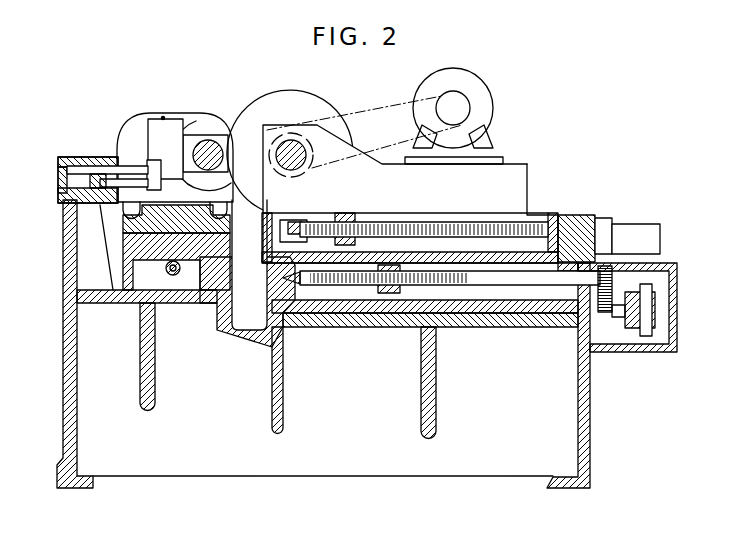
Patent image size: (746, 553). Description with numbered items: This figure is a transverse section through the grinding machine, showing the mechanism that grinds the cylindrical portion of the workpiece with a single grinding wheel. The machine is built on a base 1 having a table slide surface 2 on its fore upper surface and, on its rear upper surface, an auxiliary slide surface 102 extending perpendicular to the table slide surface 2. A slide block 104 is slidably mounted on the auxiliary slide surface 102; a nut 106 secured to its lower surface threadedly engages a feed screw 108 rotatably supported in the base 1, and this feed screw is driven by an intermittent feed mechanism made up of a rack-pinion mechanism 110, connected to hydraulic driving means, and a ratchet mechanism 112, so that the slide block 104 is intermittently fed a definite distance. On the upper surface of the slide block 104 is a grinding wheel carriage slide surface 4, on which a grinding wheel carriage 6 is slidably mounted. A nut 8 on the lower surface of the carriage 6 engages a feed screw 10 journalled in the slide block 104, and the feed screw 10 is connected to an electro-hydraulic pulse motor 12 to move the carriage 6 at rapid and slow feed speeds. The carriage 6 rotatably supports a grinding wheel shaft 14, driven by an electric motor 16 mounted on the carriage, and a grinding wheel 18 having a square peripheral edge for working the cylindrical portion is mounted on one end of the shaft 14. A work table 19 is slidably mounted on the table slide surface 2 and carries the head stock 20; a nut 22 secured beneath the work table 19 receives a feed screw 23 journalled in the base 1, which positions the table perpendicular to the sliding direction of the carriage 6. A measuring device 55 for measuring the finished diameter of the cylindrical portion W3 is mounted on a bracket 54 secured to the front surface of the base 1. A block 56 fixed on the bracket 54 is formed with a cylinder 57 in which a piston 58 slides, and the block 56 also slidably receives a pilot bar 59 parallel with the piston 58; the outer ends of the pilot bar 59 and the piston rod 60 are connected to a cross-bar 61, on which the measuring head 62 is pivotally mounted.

The base 1 is at (63, 388).
The table slide surface 2 is at (234, 278).
The grinding wheel carriage slide surface 4 is at (537, 196).
The grinding wheel carriage 6 is at (368, 166).
The nut 8 is at (344, 215).
The feed screw 10 is at (428, 222).
The electro-hydraulic pulse motor 12 is at (620, 230).
The grinding wheel shaft 14 is at (308, 152).
The electric motor 16 is at (484, 103).
The grinding wheel 18 is at (260, 92).
The work table 19 is at (125, 252).
The head stock 20 is at (228, 200).
The nut 22 is at (140, 312).
The feed screw 23 is at (176, 278).
The bracket 54 is at (70, 225).
The measuring device 55 is at (163, 117).
The block 56 is at (62, 166).
The cylinder 57 is at (62, 191).
The piston 58 is at (86, 157).
The pilot bar 59 is at (97, 175).
The piston rod 60 is at (135, 184).
The cross-bar 61 is at (149, 160).
The measuring head 62 is at (173, 125).
The cylindrical portion of the workpiece W3 is at (210, 138).
The auxiliary slide surface 102 is at (533, 260).
The slide block 104 is at (476, 268).
The nut 106 is at (387, 296).
The feed screw 108 is at (326, 282).
The rack-pinion mechanism 110 is at (630, 336).
The ratchet mechanism 112 is at (671, 281).